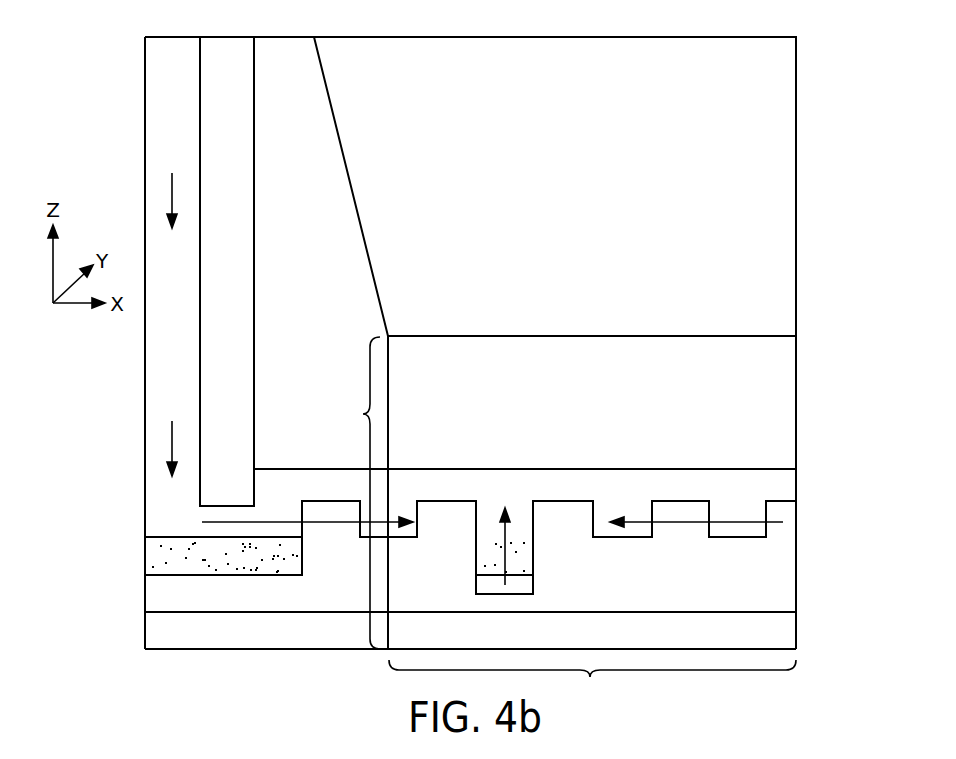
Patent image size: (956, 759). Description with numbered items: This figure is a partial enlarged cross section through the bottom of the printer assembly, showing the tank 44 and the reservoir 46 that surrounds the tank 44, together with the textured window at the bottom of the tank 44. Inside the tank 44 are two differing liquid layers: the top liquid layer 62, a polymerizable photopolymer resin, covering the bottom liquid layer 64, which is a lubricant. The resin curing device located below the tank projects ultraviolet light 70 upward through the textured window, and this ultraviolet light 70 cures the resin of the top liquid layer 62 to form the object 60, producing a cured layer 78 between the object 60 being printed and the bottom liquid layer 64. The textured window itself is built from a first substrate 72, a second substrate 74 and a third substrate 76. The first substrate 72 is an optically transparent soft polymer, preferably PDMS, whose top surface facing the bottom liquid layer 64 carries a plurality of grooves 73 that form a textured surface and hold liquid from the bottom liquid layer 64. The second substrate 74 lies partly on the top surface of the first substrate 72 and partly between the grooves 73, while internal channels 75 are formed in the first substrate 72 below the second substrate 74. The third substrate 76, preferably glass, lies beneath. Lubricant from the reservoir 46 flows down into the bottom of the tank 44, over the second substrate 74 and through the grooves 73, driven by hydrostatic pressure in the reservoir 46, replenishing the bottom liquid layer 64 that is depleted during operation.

The tank 44 is at (229, 87).
The reservoir 46 is at (172, 92).
The object 60 is at (710, 181).
The top liquid layer 62 is at (303, 187).
The bottom liquid layer 64 is at (775, 485).
The ultraviolet light 70 is at (562, 519).
The first substrate 72 is at (762, 578).
The grooves 73 is at (768, 512).
The second substrate 74 is at (167, 557).
The internal channels 75 is at (520, 585).
The third substrate 76 is at (765, 631).
The cured layer 78 is at (718, 404).